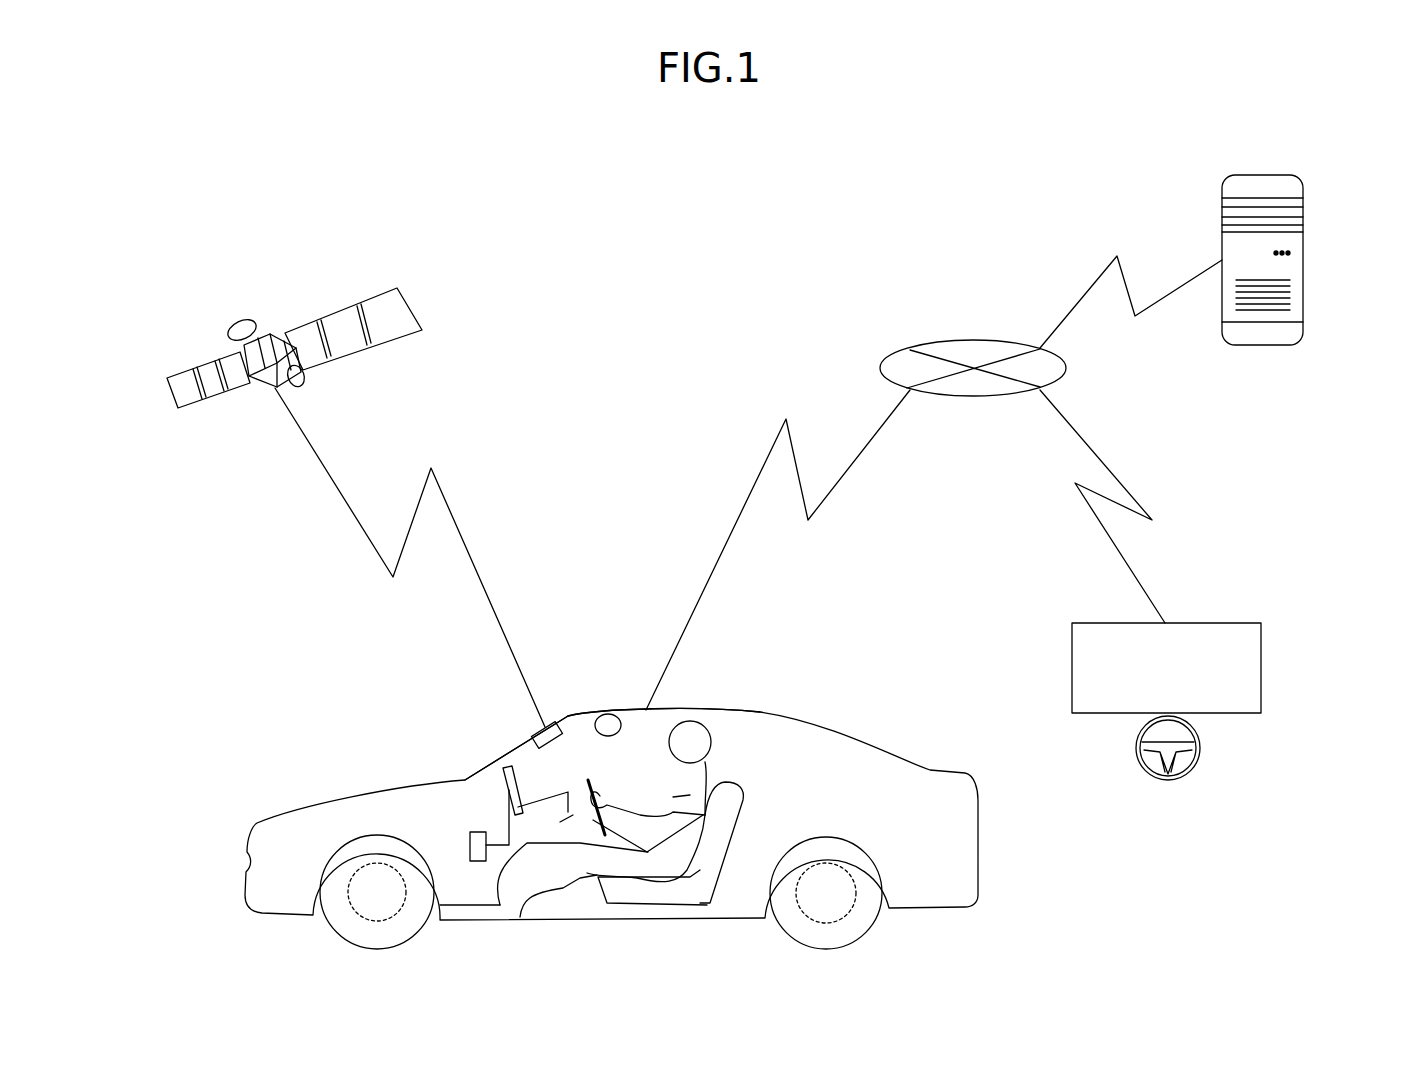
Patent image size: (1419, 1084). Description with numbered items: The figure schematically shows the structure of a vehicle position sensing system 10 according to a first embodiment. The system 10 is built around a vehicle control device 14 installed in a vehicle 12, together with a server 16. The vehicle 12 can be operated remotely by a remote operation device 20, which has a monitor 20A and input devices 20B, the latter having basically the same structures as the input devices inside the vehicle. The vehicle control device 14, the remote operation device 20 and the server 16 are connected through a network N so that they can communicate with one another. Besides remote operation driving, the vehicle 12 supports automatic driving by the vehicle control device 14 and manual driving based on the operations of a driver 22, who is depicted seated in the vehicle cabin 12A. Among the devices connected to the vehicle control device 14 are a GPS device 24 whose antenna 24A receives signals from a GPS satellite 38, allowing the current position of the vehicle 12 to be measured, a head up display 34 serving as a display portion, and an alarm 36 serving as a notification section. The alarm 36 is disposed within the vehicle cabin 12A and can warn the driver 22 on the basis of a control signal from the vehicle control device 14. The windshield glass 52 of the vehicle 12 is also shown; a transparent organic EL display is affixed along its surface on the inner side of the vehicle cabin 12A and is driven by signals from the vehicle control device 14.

The vehicle position sensing system 10 is at (771, 292).
The vehicle 12 is at (858, 722).
The vehicle cabin 12A is at (633, 715).
The vehicle control device 14 is at (478, 832).
The server 16 is at (1220, 210).
The remote operation device 20 is at (1222, 600).
The monitor 20A is at (1245, 665).
The input devices 20B is at (1200, 745).
The driver 22 is at (698, 747).
The GPS device 24 is at (581, 679).
The antenna 24A is at (573, 717).
The head up display 34 is at (518, 778).
The alarm 36 is at (607, 722).
The GPS satellite 38 is at (400, 308).
The windshield glass 52 is at (508, 750).
The network N is at (963, 345).